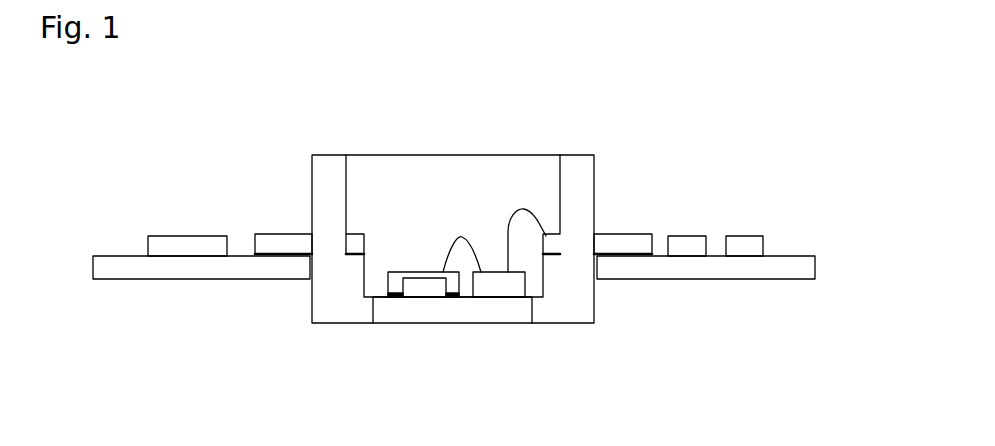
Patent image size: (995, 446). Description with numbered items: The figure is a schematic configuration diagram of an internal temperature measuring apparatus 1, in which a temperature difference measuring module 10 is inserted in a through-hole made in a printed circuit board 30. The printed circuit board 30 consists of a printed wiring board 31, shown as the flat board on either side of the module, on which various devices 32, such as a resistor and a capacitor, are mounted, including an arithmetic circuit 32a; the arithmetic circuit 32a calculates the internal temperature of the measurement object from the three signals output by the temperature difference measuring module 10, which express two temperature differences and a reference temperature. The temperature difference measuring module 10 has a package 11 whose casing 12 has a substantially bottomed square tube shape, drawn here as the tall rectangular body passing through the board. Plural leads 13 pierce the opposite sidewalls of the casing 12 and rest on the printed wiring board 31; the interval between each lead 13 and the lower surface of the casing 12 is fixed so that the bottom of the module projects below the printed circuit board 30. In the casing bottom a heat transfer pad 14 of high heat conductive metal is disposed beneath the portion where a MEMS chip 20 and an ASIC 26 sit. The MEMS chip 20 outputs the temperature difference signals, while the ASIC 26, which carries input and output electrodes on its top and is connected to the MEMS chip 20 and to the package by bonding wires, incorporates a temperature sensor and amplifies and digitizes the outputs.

The internal temperature measuring apparatus 1 is at (855, 160).
The temperature difference measuring module 10 is at (630, 159).
The package 11 is at (333, 165).
The casing 12 is at (453, 239).
The lead 13 is at (275, 243).
The heat transfer pad 14 is at (408, 313).
The MEMS chip 20 is at (400, 277).
The ASIC 26 is at (492, 275).
The printed circuit board 30 is at (798, 228).
The printed wiring board 31 is at (782, 270).
The device 32 is at (688, 245).
The arithmetic circuit 32a is at (192, 247).